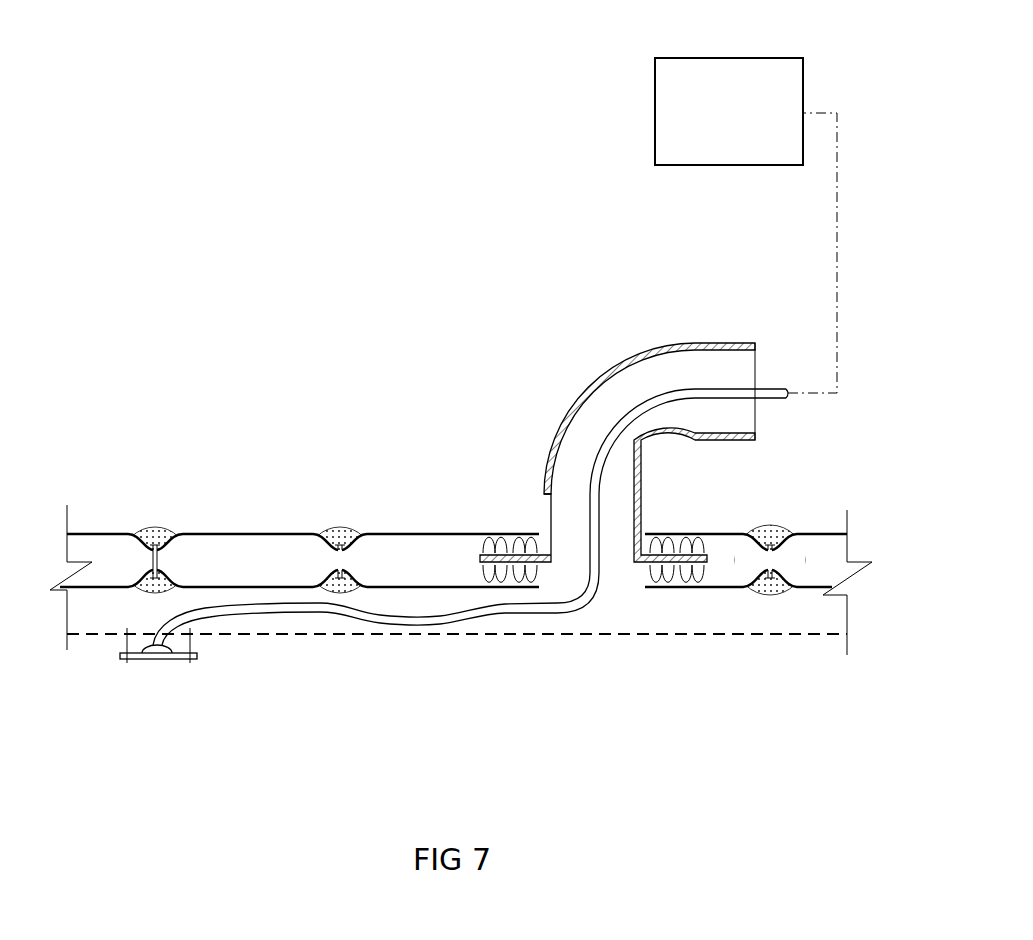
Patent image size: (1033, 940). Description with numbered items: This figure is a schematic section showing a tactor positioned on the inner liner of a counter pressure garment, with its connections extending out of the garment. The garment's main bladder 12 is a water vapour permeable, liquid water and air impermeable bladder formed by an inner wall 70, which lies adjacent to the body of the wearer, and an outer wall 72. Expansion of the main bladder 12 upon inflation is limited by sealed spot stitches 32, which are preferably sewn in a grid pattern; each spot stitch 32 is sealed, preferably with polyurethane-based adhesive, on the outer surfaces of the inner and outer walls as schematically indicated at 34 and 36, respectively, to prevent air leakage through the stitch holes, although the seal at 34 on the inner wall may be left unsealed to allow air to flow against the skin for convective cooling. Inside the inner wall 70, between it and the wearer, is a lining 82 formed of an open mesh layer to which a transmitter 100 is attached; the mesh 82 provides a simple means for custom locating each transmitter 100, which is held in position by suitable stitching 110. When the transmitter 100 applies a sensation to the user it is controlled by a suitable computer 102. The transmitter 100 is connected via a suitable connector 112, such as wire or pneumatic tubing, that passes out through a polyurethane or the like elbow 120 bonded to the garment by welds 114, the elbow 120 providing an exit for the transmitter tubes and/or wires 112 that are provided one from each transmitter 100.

The main bladder 12 is at (482, 512).
The sealed spot stitches 32 is at (136, 508).
The seal on inner wall 34 is at (143, 592).
The seal on outer wall 36 is at (339, 525).
The inner wall 70 is at (92, 588).
The outer wall 72 is at (215, 533).
The lining 82 is at (345, 637).
The transmitter 100 is at (197, 663).
The computer 102 is at (737, 57).
The stitching 110 is at (190, 665).
The connectors 112 is at (390, 615).
The welds 114 is at (497, 537).
The elbows 120 is at (628, 367).